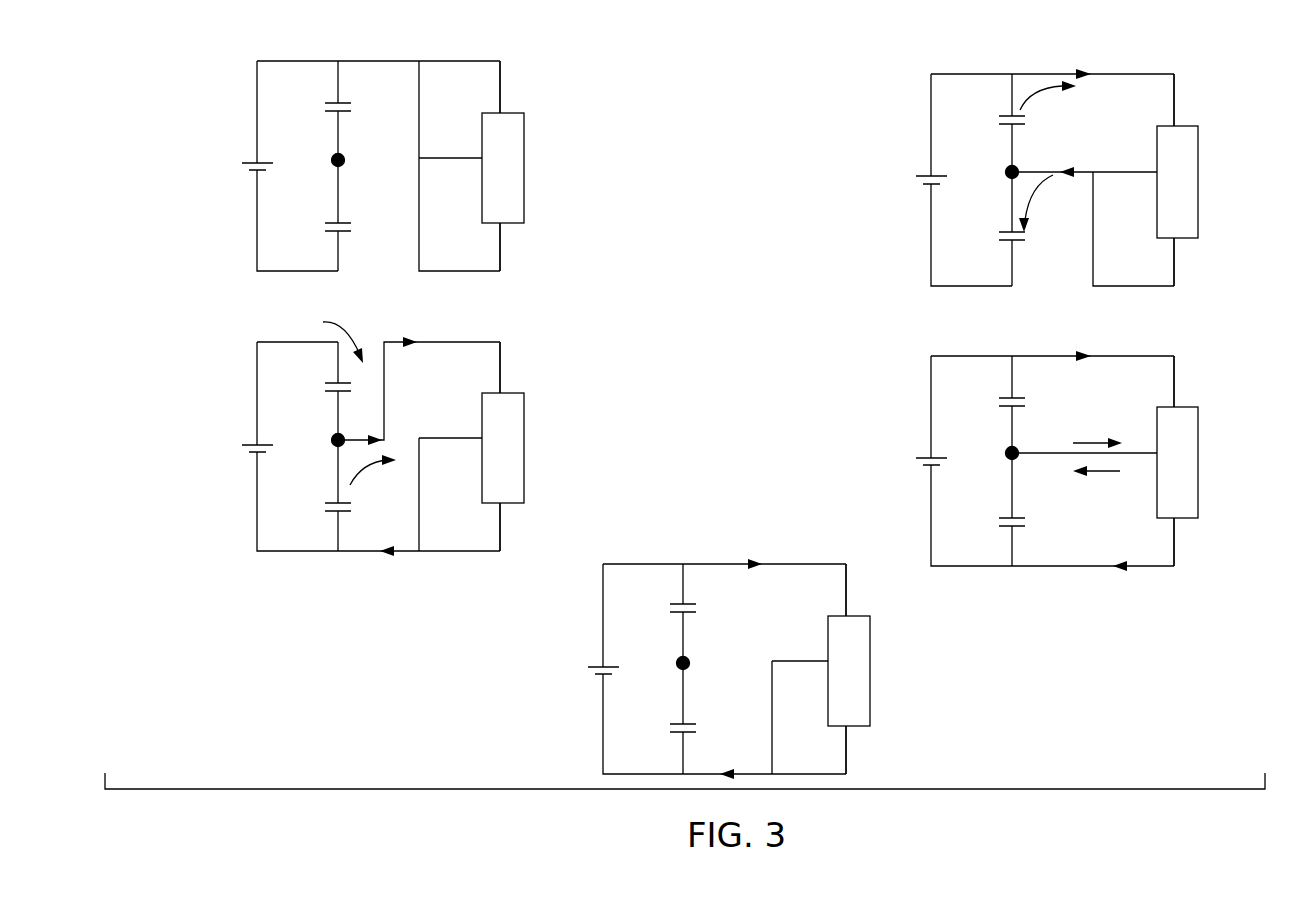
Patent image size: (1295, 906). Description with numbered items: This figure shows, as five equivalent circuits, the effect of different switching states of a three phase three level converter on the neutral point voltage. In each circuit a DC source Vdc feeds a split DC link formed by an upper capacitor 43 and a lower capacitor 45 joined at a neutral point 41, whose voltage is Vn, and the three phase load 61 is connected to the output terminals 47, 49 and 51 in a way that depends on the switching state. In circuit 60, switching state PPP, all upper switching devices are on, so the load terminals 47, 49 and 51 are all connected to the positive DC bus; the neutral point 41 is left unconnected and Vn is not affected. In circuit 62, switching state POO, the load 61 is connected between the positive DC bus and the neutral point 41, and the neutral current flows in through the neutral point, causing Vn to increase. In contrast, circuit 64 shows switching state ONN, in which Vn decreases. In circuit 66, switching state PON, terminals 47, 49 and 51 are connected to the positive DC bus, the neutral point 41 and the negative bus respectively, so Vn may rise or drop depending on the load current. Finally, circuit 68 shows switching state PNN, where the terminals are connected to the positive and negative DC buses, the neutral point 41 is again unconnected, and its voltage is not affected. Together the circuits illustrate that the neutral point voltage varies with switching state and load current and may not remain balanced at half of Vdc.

The neutral point 41 is at (334, 155).
The capacitor 43 is at (331, 103).
The capacitor 45 is at (330, 222).
The output terminal 47 is at (503, 93).
The output terminal 49 is at (430, 157).
The output terminal 51 is at (503, 258).
The three phase load 61 is at (527, 153).
The circuit 60 is at (195, 72).
The circuit 62 is at (870, 88).
The circuit 64 is at (195, 353).
The circuit 66 is at (870, 370).
The circuit 68 is at (705, 530).